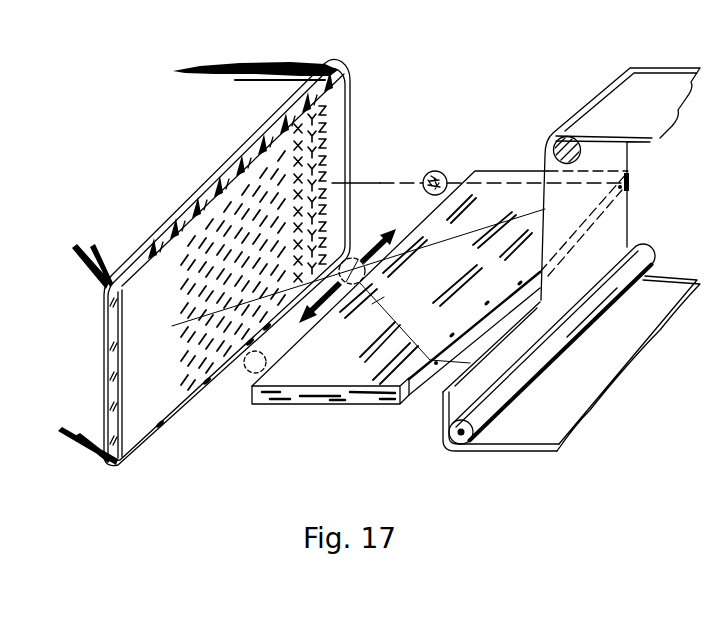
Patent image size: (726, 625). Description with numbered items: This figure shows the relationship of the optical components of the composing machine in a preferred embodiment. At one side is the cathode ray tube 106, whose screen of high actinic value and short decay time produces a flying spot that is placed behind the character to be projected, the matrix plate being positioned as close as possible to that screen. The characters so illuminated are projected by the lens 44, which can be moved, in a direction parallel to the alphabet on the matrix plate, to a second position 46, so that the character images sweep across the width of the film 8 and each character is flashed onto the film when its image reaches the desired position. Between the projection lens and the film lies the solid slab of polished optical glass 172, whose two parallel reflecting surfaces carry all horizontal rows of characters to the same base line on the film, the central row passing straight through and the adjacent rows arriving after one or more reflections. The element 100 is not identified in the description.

The film 8 is at (637, 128).
The lens 44 is at (444, 173).
The lens position 46 is at (250, 372).
The original document holder 100 is at (130, 441).
The cathode ray tube 106 is at (338, 66).
The solid slab of polished optical glass 172 is at (339, 398).